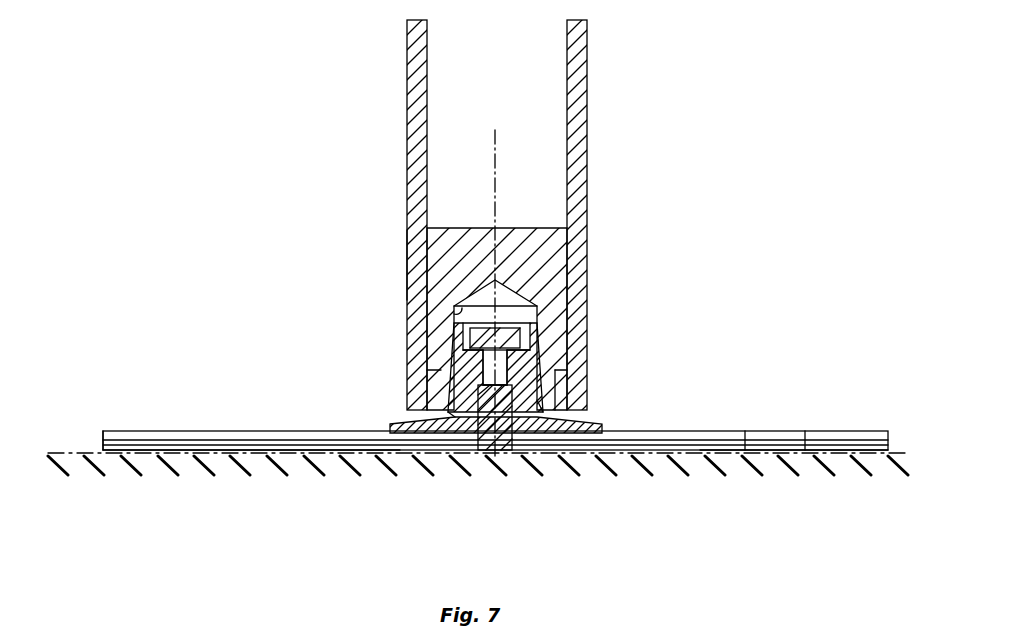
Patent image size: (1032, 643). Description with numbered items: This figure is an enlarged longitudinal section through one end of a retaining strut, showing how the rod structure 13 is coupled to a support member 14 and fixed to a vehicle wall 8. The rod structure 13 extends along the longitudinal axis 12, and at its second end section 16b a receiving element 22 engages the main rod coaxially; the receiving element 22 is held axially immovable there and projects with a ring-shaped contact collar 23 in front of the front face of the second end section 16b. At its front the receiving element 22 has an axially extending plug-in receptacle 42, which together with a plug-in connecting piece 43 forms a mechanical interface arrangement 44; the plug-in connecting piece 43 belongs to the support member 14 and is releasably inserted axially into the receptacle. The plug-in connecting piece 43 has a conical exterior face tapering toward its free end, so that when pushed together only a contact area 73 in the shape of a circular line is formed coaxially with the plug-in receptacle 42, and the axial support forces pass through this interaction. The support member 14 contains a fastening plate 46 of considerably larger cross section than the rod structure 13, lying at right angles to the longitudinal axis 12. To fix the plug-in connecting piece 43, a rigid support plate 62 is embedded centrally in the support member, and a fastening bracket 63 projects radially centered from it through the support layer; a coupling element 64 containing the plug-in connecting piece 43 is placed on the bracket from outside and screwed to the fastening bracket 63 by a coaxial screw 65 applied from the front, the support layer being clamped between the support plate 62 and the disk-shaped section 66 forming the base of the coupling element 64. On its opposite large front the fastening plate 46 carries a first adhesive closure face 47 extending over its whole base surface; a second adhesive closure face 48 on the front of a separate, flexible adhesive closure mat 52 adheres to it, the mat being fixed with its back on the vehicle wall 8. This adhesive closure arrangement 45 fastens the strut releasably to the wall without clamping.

The rod structure 13 is at (592, 80).
The longitudinal axis 12 is at (493, 145).
The receiving element 22 is at (533, 245).
The plug-in receptacle 42 is at (463, 304).
The second end section 16b is at (407, 270).
The plug-in connecting piece 43 is at (458, 352).
The fastening bracket 63 is at (455, 380).
The coaxial screw 65 is at (506, 342).
The mechanical interface arrangement 44 is at (524, 363).
The contact collar 23 is at (560, 371).
The coupling element 64 is at (553, 408).
The disk-shaped section 66 is at (570, 418).
The contact area 73 is at (447, 422).
The support plate 62 is at (558, 455).
The support member 14 is at (310, 428).
The adhesive closure arrangement 45 is at (100, 447).
The adhesive closure mat 52 is at (226, 456).
The second adhesive closure face 48 is at (745, 440).
The fastening plate 46 is at (806, 436).
The first adhesive closure face 47 is at (730, 458).
The vehicle wall 8 is at (806, 463).